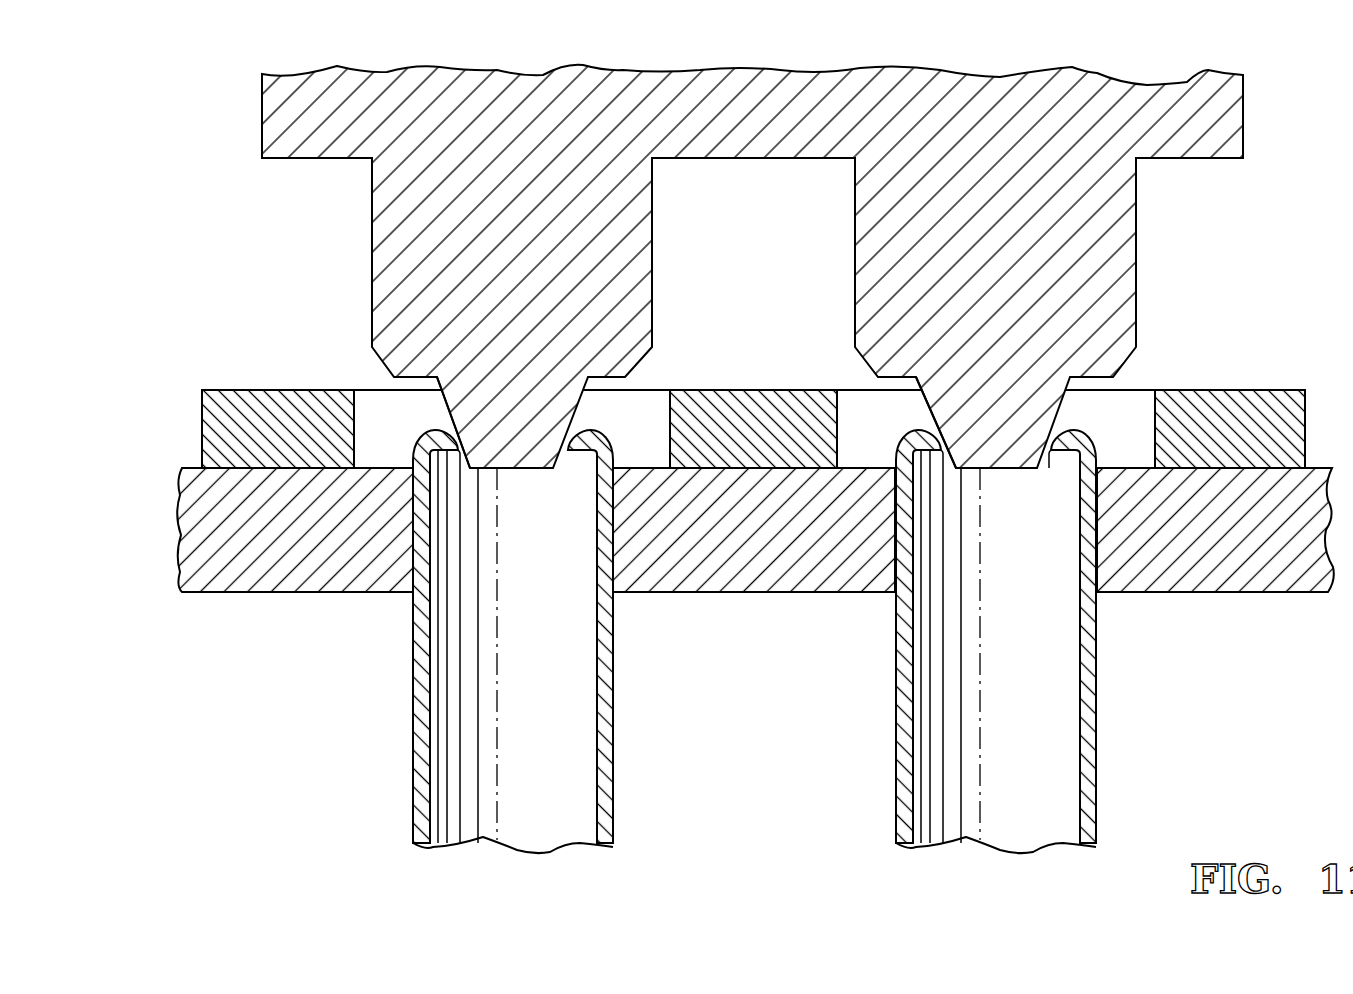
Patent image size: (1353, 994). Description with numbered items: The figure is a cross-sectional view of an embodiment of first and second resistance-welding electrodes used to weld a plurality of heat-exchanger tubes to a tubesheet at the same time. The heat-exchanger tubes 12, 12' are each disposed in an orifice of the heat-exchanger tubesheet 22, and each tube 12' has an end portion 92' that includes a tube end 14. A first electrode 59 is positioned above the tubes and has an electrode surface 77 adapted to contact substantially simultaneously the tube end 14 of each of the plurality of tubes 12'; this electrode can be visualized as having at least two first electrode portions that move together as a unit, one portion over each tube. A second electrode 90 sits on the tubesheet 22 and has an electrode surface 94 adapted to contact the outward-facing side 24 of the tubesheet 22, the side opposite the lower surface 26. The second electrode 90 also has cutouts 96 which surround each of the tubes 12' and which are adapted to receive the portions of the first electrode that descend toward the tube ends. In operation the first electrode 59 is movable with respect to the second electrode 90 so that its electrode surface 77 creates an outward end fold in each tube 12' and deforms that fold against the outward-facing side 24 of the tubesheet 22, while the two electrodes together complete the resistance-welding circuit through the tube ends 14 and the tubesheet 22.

The heat exchanger tube 12 is at (1024, 651).
The heat exchanger tube 12' is at (542, 651).
The tube end 14 is at (562, 452).
The heat-exchanger tubesheet 22 is at (243, 603).
The outward-facing side 24 is at (196, 465).
The lower surface of header plate 26 is at (196, 592).
The first electrode 59 is at (252, 126).
The electrode surface 77 is at (440, 402).
The second electrode 90 is at (744, 380).
The end portion 92' is at (879, 381).
The electrode surface 94 is at (278, 468).
The cutouts 96 is at (1140, 408).